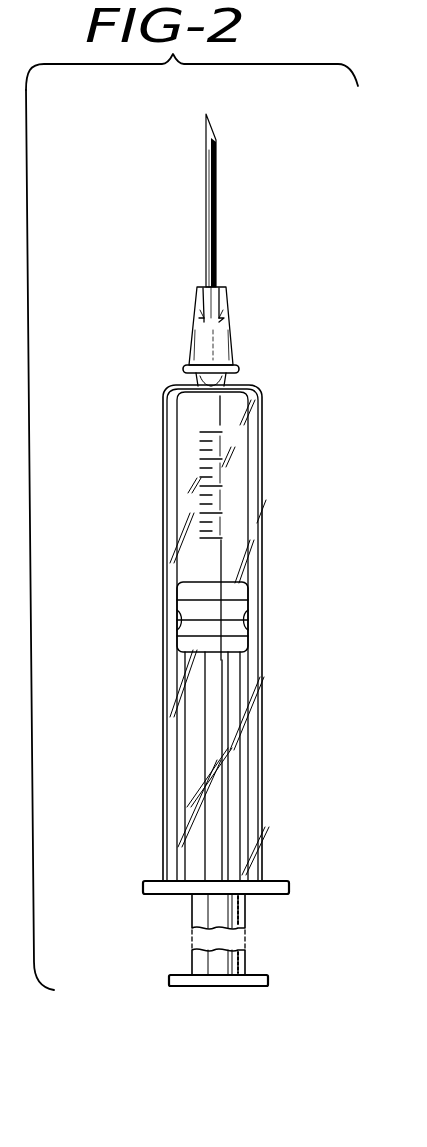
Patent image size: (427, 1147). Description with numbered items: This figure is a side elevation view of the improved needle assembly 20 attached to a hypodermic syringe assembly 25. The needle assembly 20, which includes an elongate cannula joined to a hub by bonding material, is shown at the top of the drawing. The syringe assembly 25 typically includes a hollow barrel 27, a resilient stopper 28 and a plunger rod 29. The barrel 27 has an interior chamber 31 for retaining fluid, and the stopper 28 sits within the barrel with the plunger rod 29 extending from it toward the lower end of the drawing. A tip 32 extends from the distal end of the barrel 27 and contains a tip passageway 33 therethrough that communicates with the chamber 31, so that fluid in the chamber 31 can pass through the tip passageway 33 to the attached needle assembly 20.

The needle assembly 20 is at (240, 318).
The hypodermic syringe assembly 25 is at (158, 603).
The hollow barrel 27 is at (258, 525).
The resilient stopper 28 is at (242, 576).
The plunger rod 29 is at (245, 913).
The interior chamber 31 is at (180, 466).
The tip 32 is at (196, 375).
The tip passageway 33 is at (232, 382).